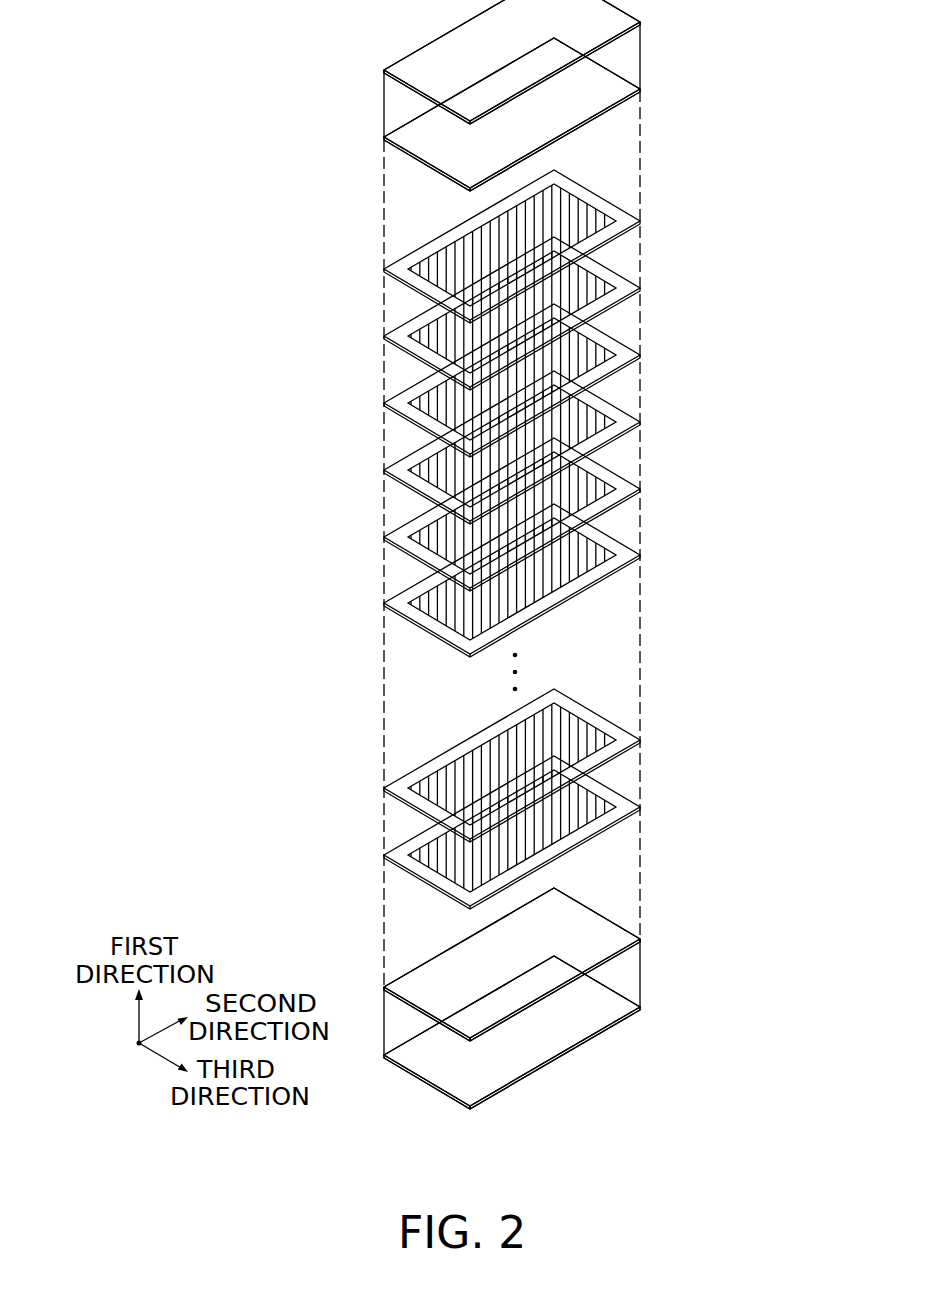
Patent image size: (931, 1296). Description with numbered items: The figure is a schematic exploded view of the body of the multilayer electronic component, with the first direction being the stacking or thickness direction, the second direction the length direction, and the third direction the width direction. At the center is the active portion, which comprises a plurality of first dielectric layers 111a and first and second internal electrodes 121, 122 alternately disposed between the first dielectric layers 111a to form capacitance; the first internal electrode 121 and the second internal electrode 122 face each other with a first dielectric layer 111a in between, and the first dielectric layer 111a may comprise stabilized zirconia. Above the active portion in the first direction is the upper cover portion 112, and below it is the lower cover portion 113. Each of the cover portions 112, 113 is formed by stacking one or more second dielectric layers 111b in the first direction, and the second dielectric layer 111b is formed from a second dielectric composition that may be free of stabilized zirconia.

The first dielectric layer 111a is at (421, 770).
The second dielectric layer 111b is at (644, 1009).
The upper cover portion 112 is at (745, 2).
The lower cover portion 113 is at (735, 925).
The first internal electrode 121 is at (400, 784).
The second internal electrode 122 is at (603, 787).